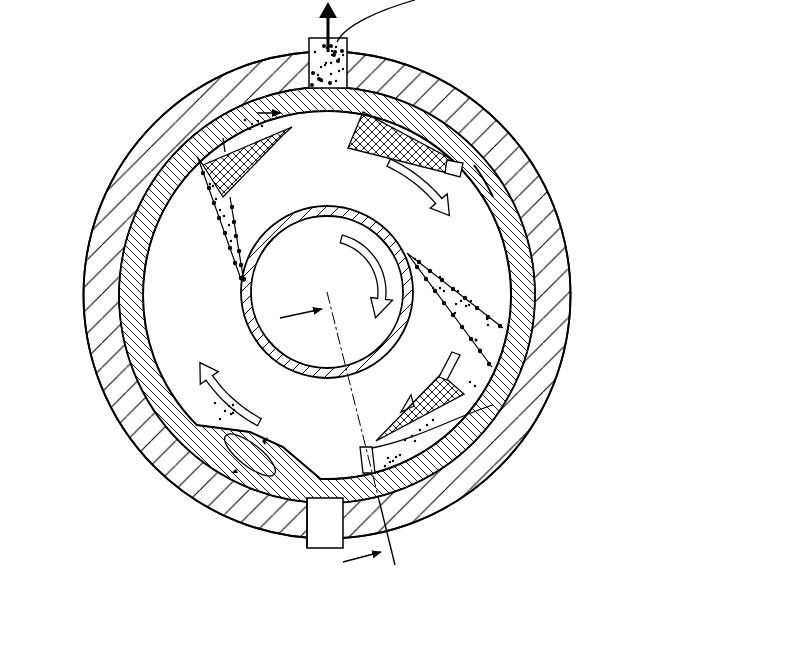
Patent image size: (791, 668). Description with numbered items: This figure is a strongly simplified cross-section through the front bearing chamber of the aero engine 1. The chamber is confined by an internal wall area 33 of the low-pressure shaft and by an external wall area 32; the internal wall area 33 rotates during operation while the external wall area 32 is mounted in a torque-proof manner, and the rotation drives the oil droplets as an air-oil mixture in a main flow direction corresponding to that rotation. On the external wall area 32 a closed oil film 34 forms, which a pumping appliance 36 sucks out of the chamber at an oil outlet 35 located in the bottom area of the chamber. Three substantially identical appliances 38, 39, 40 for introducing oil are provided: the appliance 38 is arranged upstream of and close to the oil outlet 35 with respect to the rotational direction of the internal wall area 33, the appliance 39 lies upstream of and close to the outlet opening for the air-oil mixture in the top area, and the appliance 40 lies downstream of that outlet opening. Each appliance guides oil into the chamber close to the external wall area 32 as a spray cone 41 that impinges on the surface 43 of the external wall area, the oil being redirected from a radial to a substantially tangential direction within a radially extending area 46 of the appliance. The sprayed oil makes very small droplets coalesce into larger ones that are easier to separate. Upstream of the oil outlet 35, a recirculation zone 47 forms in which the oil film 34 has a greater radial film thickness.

The aero engine 1 is at (138, 58).
The external wall area 32 is at (506, 112).
The internal wall area 33 is at (242, 311).
The oil film 34 is at (538, 263).
The oil outlet 35 is at (305, 522).
The pumping appliance 36 is at (327, 541).
The appliance for introducing oil 38 is at (387, 472).
The appliance for introducing oil 39 is at (243, 107).
The appliance for introducing oil 40 is at (468, 168).
The spray cone 41 is at (380, 128).
The surface of the external wall area 43 is at (491, 199).
The area of the appliance 46 is at (378, 481).
The recirculation zone 47 is at (253, 477).